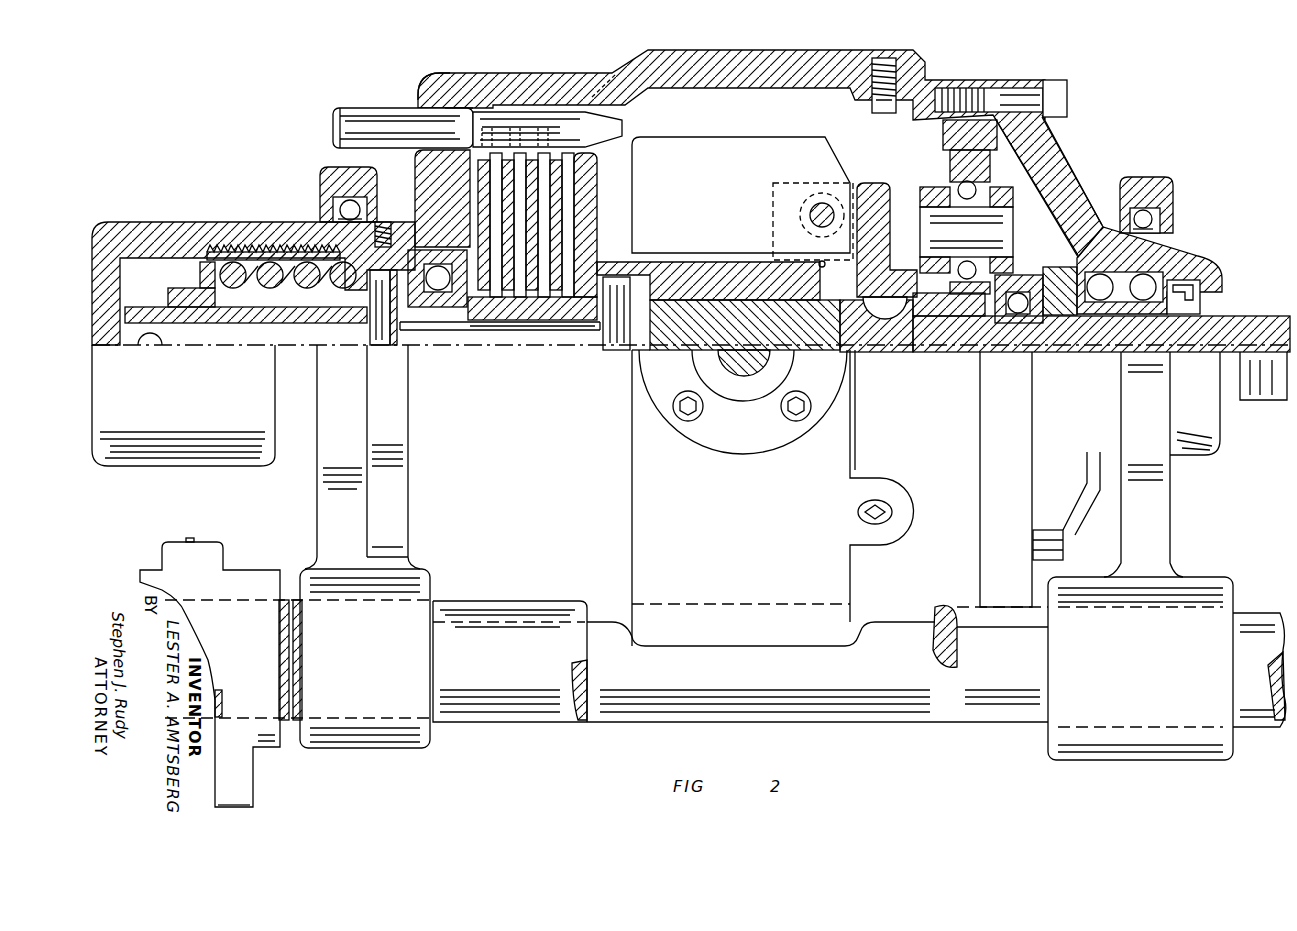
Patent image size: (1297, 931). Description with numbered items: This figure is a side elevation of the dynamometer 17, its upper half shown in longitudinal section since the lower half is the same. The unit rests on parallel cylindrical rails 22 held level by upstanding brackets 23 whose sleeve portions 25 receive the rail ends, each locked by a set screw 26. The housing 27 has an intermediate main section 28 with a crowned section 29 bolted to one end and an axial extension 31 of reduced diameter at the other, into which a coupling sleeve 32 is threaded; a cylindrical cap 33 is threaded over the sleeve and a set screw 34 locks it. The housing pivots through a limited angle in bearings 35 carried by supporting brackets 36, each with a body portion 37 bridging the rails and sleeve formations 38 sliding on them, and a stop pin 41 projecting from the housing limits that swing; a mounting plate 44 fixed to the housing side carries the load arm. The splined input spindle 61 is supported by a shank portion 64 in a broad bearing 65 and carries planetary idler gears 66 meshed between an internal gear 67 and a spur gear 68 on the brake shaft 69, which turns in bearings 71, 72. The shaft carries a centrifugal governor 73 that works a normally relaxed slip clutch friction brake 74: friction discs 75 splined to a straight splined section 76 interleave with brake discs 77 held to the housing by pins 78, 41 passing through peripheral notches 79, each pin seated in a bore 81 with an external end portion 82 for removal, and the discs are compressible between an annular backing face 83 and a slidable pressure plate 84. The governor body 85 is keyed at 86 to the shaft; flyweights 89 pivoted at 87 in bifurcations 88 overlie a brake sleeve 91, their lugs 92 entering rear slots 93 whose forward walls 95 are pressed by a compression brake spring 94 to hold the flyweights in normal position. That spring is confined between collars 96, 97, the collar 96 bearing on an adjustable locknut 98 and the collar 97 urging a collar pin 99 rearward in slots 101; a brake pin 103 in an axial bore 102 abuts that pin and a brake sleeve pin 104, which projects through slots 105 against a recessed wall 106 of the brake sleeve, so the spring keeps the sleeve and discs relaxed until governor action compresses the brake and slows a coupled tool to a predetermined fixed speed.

The dynamometer 17 is at (618, 68).
The cylindrical rods or rails 22 is at (565, 722).
The upstanding brackets 23 is at (253, 785).
The sleeve portions 25 is at (255, 570).
The set screw 26 is at (192, 538).
The housing 27 is at (420, 71).
The intermediate main section 28 is at (790, 50).
The crowned section 29 is at (1052, 160).
The axial extension 31 is at (300, 222).
The coupling sleeve 32 is at (240, 246).
The cylindrical cap 33 is at (160, 466).
The set screw 34 is at (385, 222).
The bearings 35 is at (1150, 212).
The supporting bracket 36 is at (1176, 205).
The body portion 37 is at (315, 506).
The sleeve formation 38 is at (430, 569).
The stop pin 41 is at (395, 547).
The mounting plate 44 is at (752, 454).
The input spindle 61 is at (1278, 401).
The shank portion 64 is at (1195, 355).
The broad bearing 65 is at (1165, 262).
The planetary idler gears 66 is at (990, 165).
The internal gear 67 is at (947, 135).
The spur gear 68 is at (985, 352).
The brake shaft 69 is at (902, 365).
The bearing 71 is at (1025, 290).
The bearing 72 is at (440, 331).
The speed control governor 73 is at (747, 128).
The slip clutch friction brake 74 is at (533, 105).
The friction discs 75 is at (540, 285).
The straight splined section 76 is at (478, 322).
The brake discs 77 is at (522, 300).
The pin 78 is at (408, 108).
The notches 79 is at (594, 95).
The complementary bore 81 is at (452, 107).
The end portion 82 is at (345, 108).
The annular backing face 83 is at (480, 163).
The pressure plate 84 is at (597, 180).
The body 85 is at (935, 187).
The key 86 is at (930, 352).
The pivot 87 is at (812, 215).
The bifurcations 88 is at (870, 183).
The centrifugal flyweight 89 is at (712, 176).
The brake sleeve 91 is at (712, 352).
The lug 92 is at (800, 352).
The slots 93 is at (865, 352).
The compression brake spring 94 is at (283, 288).
The forward walls 95 is at (818, 262).
The collar 96 is at (232, 307).
The collar 97 is at (335, 323).
The adjustable locknut 98 is at (197, 262).
The collar pin 99 is at (395, 340).
The longitudinal slots 101 is at (378, 330).
The axial bore 102 is at (158, 342).
The brake pin 103 is at (555, 331).
The brake sleeve pin 104 is at (617, 352).
The longitudinally extending slots 105 is at (650, 353).
The recessed wall 106 is at (637, 262).